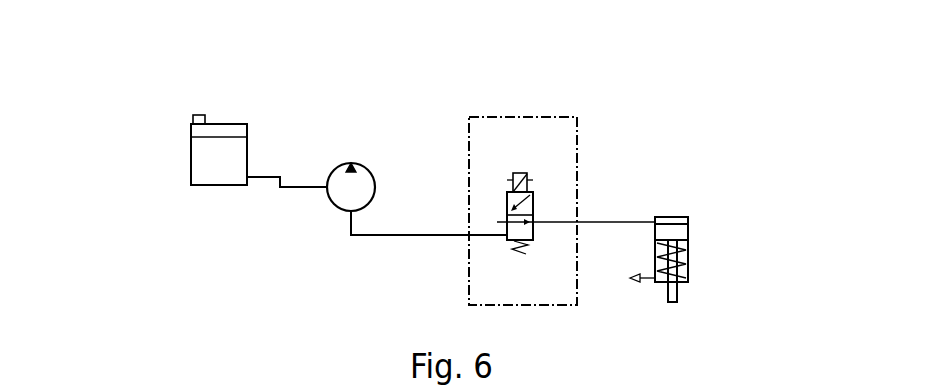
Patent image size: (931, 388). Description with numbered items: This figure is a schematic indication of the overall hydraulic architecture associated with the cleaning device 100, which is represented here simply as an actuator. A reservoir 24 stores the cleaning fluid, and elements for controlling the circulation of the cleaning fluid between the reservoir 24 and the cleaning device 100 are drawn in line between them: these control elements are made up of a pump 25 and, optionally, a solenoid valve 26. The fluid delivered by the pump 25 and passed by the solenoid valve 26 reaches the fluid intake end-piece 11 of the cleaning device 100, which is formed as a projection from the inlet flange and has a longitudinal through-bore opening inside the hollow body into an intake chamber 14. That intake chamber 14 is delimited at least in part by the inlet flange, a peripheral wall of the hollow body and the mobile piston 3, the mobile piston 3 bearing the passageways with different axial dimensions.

The reservoir 24 is at (191, 173).
The pump 25 is at (352, 163).
The solenoid valve 26 is at (521, 117).
The cleaning device 100 is at (692, 199).
The fluid intake end-piece 11 is at (655, 226).
The intake chamber 14 is at (675, 231).
The mobile piston 3 is at (677, 292).